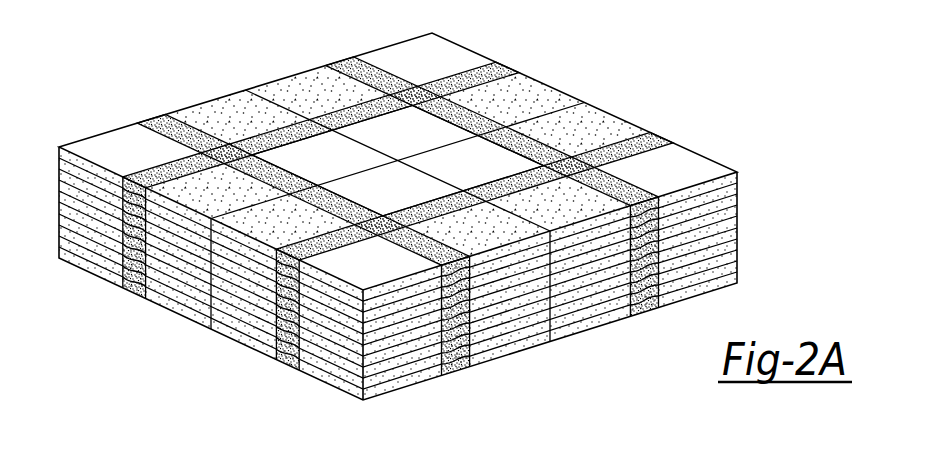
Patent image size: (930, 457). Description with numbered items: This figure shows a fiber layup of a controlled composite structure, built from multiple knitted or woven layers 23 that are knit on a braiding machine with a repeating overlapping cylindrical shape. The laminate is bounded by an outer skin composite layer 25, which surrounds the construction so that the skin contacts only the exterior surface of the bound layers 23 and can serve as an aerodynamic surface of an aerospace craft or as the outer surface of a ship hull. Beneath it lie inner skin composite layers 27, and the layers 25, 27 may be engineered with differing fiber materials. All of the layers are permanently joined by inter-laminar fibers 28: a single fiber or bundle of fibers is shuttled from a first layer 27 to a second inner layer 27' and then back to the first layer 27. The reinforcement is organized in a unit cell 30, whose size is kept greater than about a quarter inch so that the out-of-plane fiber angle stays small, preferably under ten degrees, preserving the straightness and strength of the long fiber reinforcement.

The knitted or woven layers 23 is at (578, 332).
The outer skin composite layer 25 is at (597, 122).
The inner skin composite layer 27 is at (445, 295).
The second inner layer 27' is at (550, 309).
The inter-laminar fibers 28 is at (645, 212).
The unit cell 30 is at (400, 132).